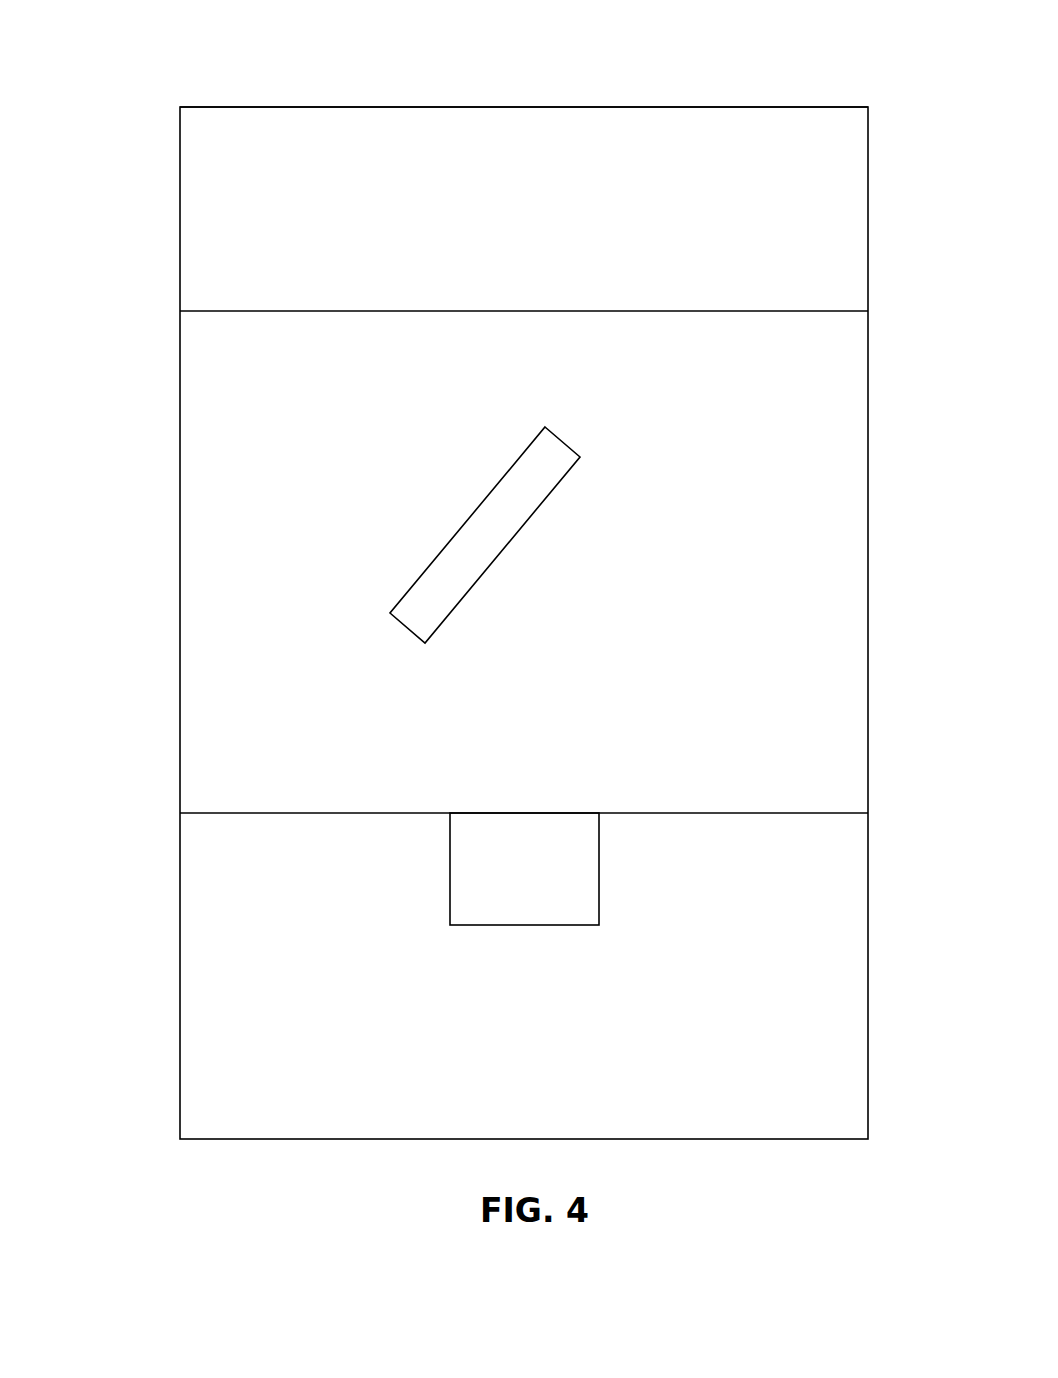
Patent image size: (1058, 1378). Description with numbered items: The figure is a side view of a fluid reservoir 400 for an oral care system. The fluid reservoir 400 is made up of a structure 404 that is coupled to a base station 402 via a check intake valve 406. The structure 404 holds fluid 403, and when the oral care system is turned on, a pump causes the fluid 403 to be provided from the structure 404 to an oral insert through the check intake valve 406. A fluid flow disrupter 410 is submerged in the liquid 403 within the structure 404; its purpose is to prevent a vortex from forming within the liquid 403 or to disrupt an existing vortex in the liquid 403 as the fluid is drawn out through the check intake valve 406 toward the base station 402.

The fluid reservoir 400 is at (138, 41).
The base station 402 is at (868, 976).
The fluid 403 is at (523, 311).
The structure 404 is at (523, 107).
The check intake valve 406 is at (602, 870).
The fluid flow disrupter 410 is at (562, 438).